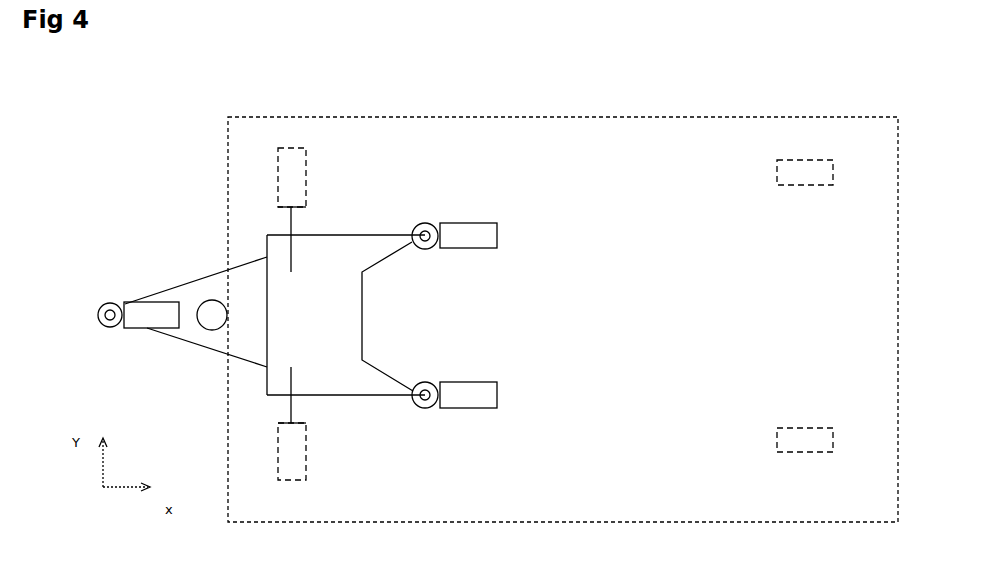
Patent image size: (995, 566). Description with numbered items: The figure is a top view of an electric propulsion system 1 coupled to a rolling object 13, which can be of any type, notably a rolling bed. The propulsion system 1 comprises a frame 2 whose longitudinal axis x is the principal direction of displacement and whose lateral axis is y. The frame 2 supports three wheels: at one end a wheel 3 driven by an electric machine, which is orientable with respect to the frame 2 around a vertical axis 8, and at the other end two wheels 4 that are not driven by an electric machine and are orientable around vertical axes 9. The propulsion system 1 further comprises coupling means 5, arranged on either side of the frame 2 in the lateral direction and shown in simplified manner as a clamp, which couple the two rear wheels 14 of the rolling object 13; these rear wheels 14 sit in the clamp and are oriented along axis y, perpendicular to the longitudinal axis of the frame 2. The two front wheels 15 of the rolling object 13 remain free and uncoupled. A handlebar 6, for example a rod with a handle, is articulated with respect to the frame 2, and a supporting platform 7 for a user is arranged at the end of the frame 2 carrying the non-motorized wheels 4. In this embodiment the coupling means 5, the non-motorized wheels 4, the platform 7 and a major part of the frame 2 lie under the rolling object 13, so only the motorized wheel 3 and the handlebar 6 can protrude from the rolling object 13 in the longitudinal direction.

The electric propulsion system 1 is at (115, 140).
The frame 2 is at (243, 287).
The wheel 3 is at (140, 302).
The wheels 4 is at (470, 247).
The coupling means 5 is at (278, 175).
The handlebar 6 is at (212, 300).
The supporting platform 7 is at (343, 250).
The vertical axis 8 is at (107, 303).
The vertical axes 9 is at (428, 222).
The rolling object 13 is at (525, 117).
The rear wheels 14 is at (293, 148).
The front wheels 15 is at (805, 160).